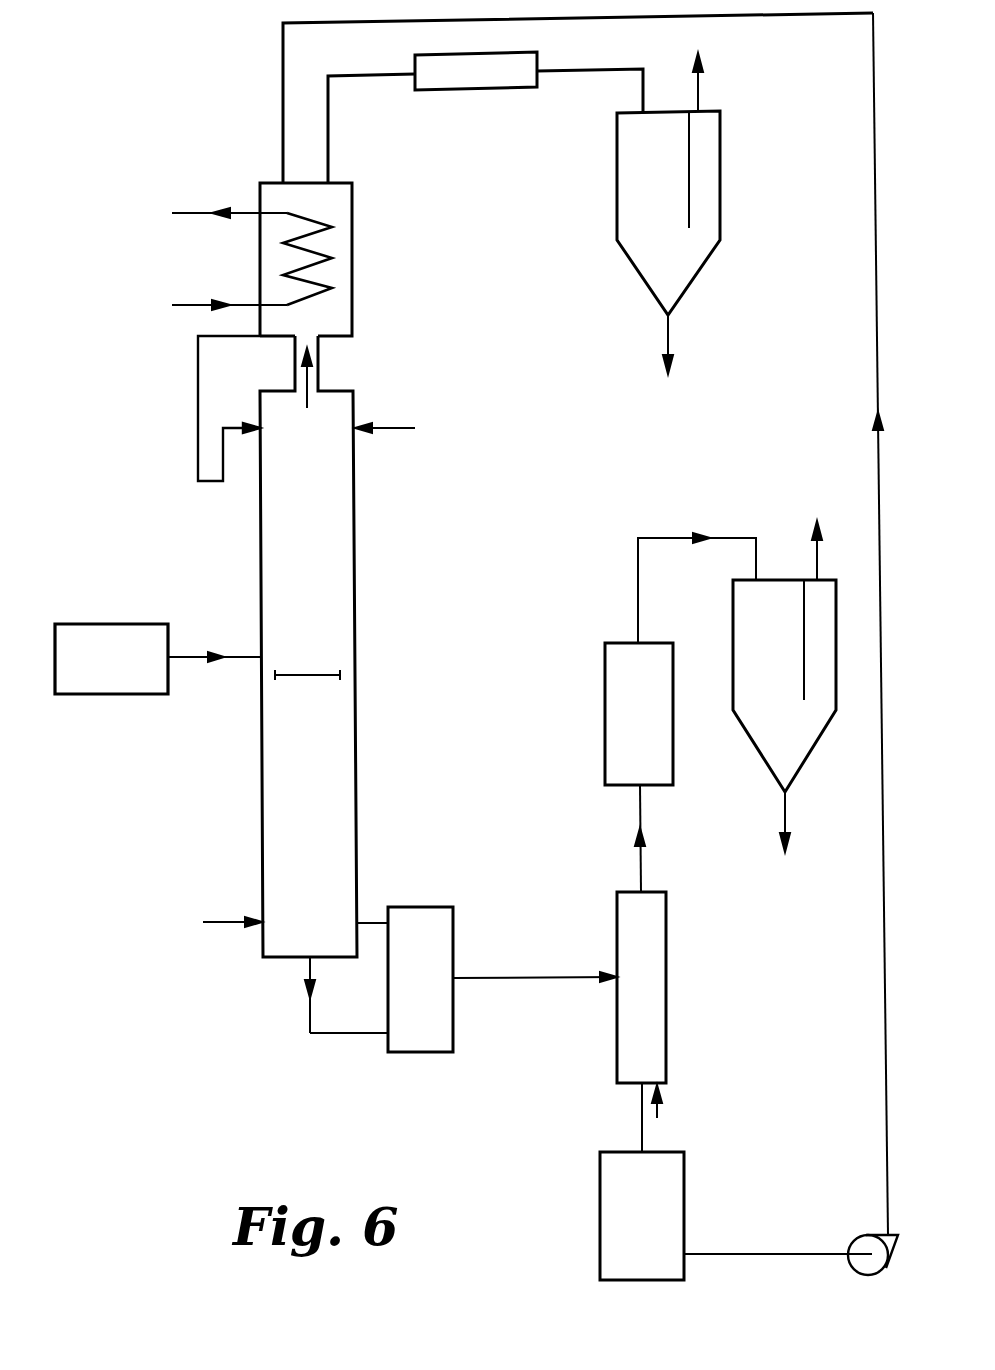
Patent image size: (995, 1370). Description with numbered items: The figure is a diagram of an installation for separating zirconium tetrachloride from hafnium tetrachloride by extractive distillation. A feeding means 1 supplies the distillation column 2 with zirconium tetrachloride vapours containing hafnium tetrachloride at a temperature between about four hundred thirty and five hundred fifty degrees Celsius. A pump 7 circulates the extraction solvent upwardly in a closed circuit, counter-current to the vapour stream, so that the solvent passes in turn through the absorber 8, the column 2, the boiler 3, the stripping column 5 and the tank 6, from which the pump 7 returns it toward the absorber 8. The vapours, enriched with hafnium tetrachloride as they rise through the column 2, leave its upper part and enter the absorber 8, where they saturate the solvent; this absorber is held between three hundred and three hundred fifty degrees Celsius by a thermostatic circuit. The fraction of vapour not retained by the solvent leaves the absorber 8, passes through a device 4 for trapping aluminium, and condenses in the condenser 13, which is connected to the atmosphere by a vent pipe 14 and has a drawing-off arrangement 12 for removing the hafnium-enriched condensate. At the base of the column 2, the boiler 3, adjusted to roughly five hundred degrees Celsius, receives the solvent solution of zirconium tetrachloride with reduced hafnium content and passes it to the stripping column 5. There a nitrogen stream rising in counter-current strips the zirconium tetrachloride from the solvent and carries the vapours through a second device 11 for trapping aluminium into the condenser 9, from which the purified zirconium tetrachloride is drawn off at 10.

The feeding means 1 is at (158, 659).
The distillation column 2 is at (306, 684).
The boiler 3 is at (502, 979).
The device for trapping aluminium 4 is at (476, 71).
The stripping column 5 is at (663, 968).
The tank 6 is at (736, 1216).
The pump 7 is at (884, 1262).
The absorber 8 is at (334, 240).
The condenser 9 is at (784, 656).
The drawing-off point for purified zirconium tetrachloride 10 is at (790, 841).
The device for trapping aluminium 11 is at (680, 659).
The drawing-off arrangement 12 is at (672, 365).
The condenser 13 is at (668, 213).
The vent pipe 14 is at (702, 63).